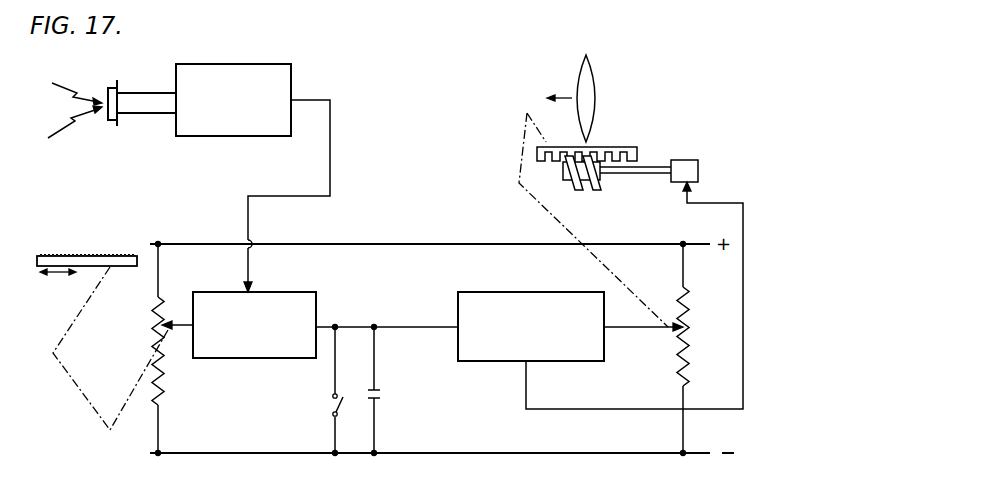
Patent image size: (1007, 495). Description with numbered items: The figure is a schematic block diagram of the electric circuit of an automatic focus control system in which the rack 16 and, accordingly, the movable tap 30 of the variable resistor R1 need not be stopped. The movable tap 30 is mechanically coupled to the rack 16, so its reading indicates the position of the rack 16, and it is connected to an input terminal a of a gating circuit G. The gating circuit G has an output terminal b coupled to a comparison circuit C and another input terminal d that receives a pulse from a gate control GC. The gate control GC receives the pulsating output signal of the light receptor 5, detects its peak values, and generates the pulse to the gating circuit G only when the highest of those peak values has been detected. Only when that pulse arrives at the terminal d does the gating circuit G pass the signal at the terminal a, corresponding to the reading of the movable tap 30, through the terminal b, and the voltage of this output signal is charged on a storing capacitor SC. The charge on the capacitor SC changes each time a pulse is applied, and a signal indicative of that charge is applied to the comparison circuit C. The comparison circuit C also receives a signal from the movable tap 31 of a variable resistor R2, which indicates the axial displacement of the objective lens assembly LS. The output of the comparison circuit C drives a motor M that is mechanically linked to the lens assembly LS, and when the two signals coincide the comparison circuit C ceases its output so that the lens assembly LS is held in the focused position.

The light receptor 5 is at (112, 121).
The rack 16 is at (87, 254).
The movable tap 30 is at (176, 330).
The movable tap 31 is at (668, 330).
The gate control GC is at (233, 137).
The gating circuit G is at (258, 358).
The comparison circuit C is at (490, 363).
The storing capacitor SC is at (381, 395).
The variable resistor R1 is at (150, 398).
The variable resistor R2 is at (688, 331).
The objective lens assembly LS is at (592, 88).
The motor M is at (684, 168).
The input terminal a is at (181, 322).
The output terminal b is at (318, 322).
The input terminal d is at (253, 288).